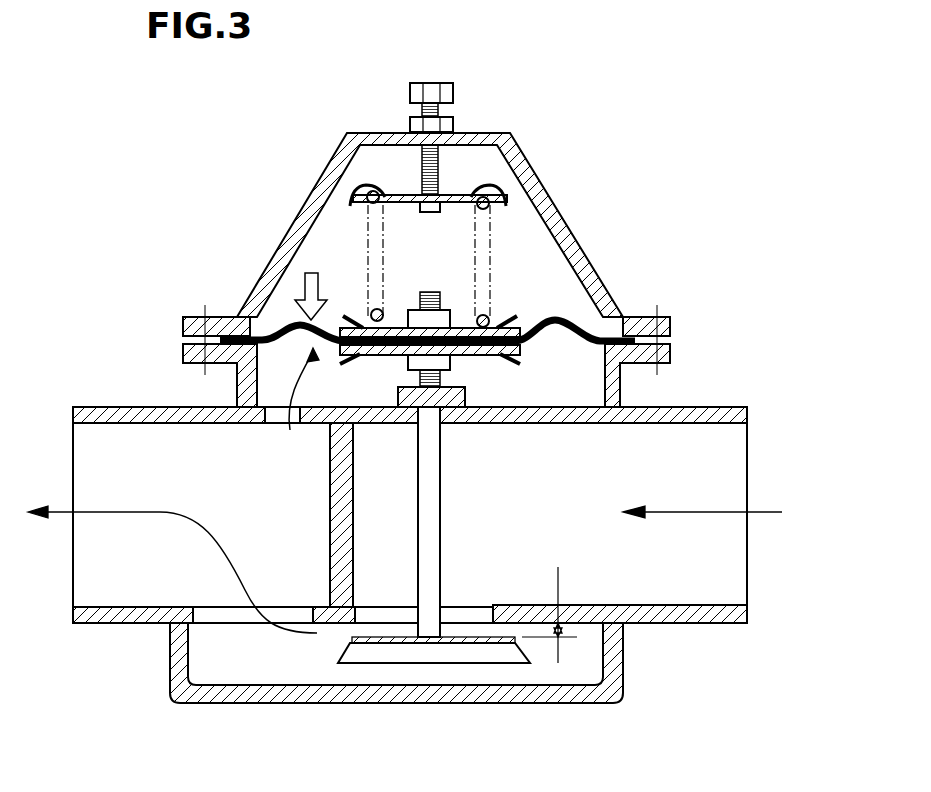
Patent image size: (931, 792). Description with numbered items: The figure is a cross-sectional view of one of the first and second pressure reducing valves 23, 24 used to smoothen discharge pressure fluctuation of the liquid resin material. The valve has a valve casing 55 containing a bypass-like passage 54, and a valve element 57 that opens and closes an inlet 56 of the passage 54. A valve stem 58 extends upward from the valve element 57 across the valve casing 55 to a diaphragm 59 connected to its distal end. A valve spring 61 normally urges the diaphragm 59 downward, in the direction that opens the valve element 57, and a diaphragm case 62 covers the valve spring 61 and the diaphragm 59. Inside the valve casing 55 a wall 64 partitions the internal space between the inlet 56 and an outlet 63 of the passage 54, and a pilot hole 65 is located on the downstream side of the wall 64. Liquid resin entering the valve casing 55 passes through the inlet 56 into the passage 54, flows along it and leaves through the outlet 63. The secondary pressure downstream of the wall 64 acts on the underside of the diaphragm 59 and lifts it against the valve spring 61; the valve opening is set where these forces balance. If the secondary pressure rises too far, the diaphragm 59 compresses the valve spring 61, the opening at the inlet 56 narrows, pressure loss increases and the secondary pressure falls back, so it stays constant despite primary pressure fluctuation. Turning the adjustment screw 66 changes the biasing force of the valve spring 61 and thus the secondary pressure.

The first pressure reducing valve 23 is at (706, 126).
The second pressure reducing valve 24 is at (640, 157).
The bypass-like passage 54 is at (436, 690).
The valve casing 55 is at (704, 614).
The inlet 56 is at (490, 610).
The valve element 57 is at (480, 653).
The valve stem 58 is at (432, 483).
The diaphragm 59 is at (567, 322).
The valve spring 61 is at (495, 263).
The diaphragm case 62 is at (545, 192).
The outlet 63 is at (310, 620).
The wall 64 is at (330, 545).
The pilot hole 65 is at (272, 412).
The adjustment screw 66 is at (430, 83).